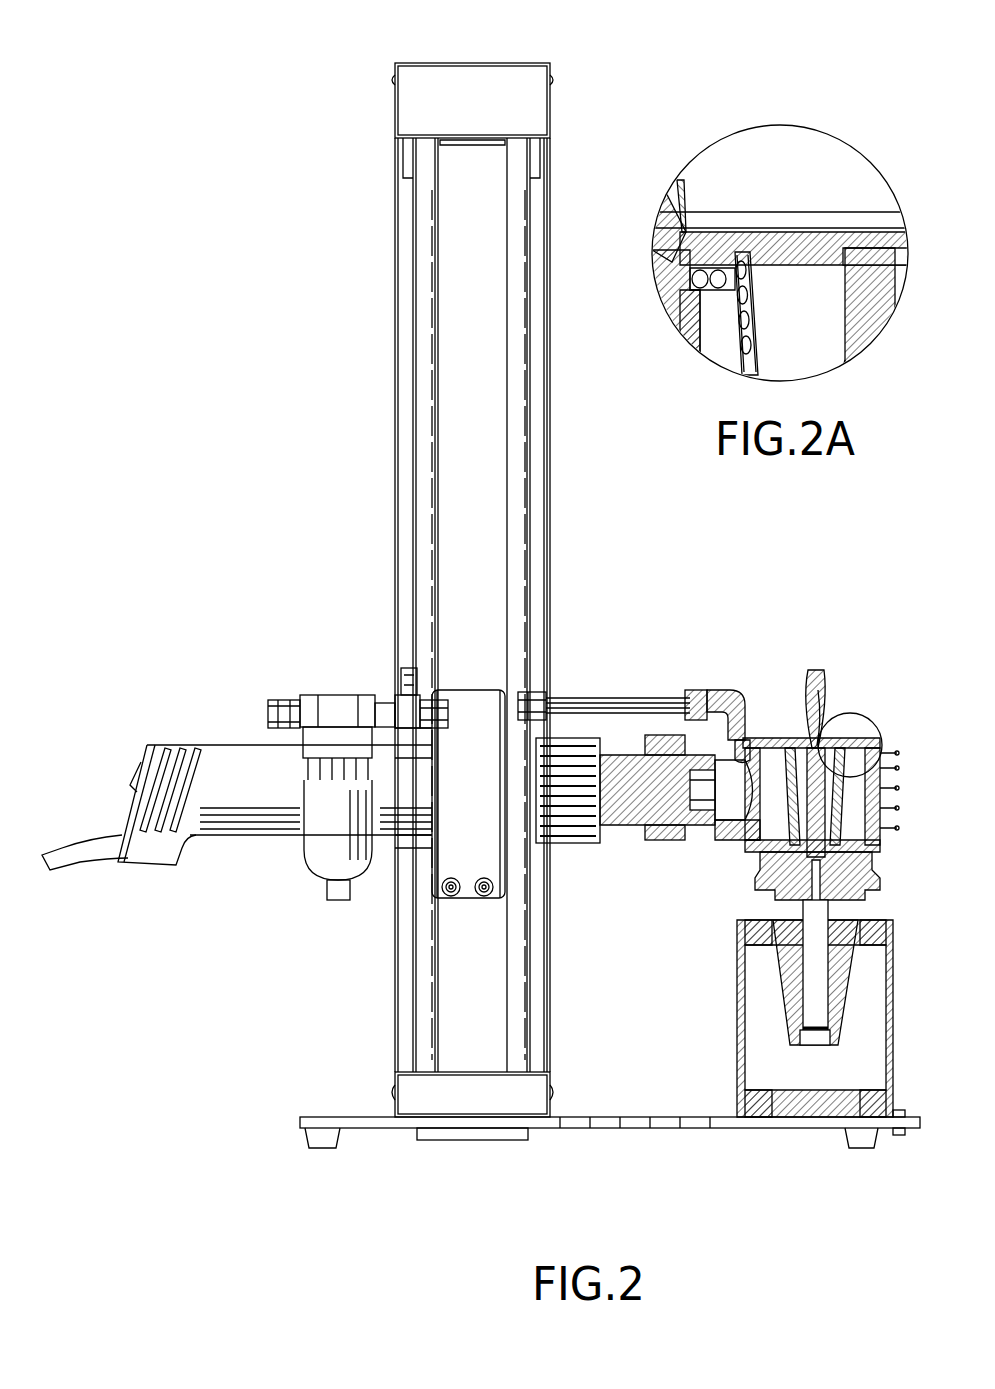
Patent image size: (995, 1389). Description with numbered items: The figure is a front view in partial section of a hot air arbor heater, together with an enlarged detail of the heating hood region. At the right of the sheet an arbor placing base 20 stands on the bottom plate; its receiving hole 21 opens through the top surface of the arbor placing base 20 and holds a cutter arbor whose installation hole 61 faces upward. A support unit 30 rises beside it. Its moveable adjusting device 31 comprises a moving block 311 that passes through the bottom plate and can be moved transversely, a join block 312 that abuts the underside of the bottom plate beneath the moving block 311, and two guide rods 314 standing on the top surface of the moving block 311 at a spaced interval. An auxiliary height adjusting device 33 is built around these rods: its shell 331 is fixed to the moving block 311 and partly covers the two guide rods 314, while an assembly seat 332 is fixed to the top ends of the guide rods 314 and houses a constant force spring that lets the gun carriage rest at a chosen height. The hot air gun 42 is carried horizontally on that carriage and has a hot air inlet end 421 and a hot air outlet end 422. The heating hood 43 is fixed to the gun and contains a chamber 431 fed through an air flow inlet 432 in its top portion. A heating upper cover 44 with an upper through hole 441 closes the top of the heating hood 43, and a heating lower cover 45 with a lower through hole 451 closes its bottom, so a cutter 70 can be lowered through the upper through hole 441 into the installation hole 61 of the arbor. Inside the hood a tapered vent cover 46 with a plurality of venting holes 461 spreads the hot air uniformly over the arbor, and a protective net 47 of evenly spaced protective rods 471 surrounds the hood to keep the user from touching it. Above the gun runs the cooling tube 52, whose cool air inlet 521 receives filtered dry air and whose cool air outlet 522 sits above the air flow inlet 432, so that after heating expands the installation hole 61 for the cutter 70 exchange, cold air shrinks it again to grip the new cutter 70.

In FIG. 2, the arbor placing base 20 is at (738, 1006).
In FIG. 2, the receiving hole 21 is at (852, 943).
In FIG. 2, the support unit 30 is at (366, 265).
In FIG. 2, the moveable adjusting device 31 is at (393, 1080).
In FIG. 2, the moving block 311 is at (530, 1091).
In FIG. 2, the join block 312 is at (446, 1134).
In FIG. 2, the guide rods 314 is at (432, 520).
In FIG. 2, the auxiliary height adjusting device 33 is at (501, 74).
In FIG. 2, the shell 331 is at (546, 386).
In FIG. 2, the assembly seat 332 is at (441, 88).
In FIG. 2, the hot air gun 42 is at (216, 750).
In FIG. 2, the hot air inlet end 421 is at (125, 818).
In FIG. 2, the hot air outlet end 422 is at (740, 822).
In FIG. 2, the heating hood 43 is at (880, 798).
In FIG. 2A, the heating hood 43 is at (876, 314).
In FIG. 2A, the chamber 431 is at (838, 355).
In FIG. 2, the air flow inlet 432 is at (742, 756).
In FIG. 2A, the heating upper cover 44 is at (786, 237).
In FIG. 2A, the upper through hole 441 is at (683, 208).
In FIG. 2, the heating lower cover 45 is at (756, 855).
In FIG. 2, the lower through hole 451 is at (846, 847).
In FIG. 2, the vent cover 46 is at (815, 796).
In FIG. 2A, the vent cover 46 is at (754, 331).
In FIG. 2A, the venting holes 461 is at (750, 298).
In FIG. 2, the protective net 47 is at (899, 769).
In FIG. 2, the protective rods 471 is at (897, 740).
In FIG. 2, the cooling tube 52 is at (641, 692).
In FIG. 2, the cool air inlet 521 is at (530, 690).
In FIG. 2, the cool air outlet 522 is at (727, 733).
In FIG. 2, the installation hole 61 is at (812, 850).
In FIG. 2, the cutter 70 is at (812, 672).